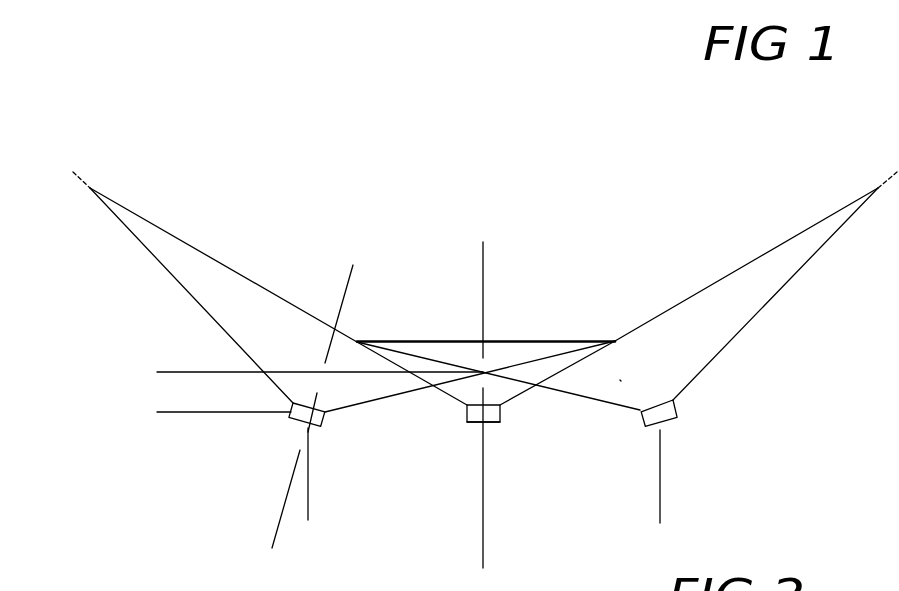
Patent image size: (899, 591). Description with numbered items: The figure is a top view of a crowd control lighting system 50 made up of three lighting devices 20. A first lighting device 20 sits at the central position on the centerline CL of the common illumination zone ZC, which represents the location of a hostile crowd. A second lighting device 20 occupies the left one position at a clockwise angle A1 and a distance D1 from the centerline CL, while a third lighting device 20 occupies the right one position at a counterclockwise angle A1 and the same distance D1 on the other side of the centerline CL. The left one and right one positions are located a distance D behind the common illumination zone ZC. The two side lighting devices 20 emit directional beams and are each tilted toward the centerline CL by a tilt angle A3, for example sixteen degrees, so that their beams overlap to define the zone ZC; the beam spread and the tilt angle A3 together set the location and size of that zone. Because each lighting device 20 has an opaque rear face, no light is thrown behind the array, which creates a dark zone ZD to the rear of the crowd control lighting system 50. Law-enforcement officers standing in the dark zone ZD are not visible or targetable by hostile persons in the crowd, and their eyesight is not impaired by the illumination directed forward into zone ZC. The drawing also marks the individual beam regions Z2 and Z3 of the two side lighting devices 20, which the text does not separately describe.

The crowd control lighting system 50 is at (779, 101).
The lighting device 20 is at (302, 415).
The common illumination zone ZC is at (433, 340).
The left zone Z2 is at (312, 406).
The right zone Z3 is at (647, 357).
The dark zone ZD is at (504, 440).
The centerline CL is at (483, 568).
The distance D is at (178, 350).
The distance D1 is at (483, 503).
The angle A1 is at (367, 402).
The tilt angle A3 is at (483, 548).